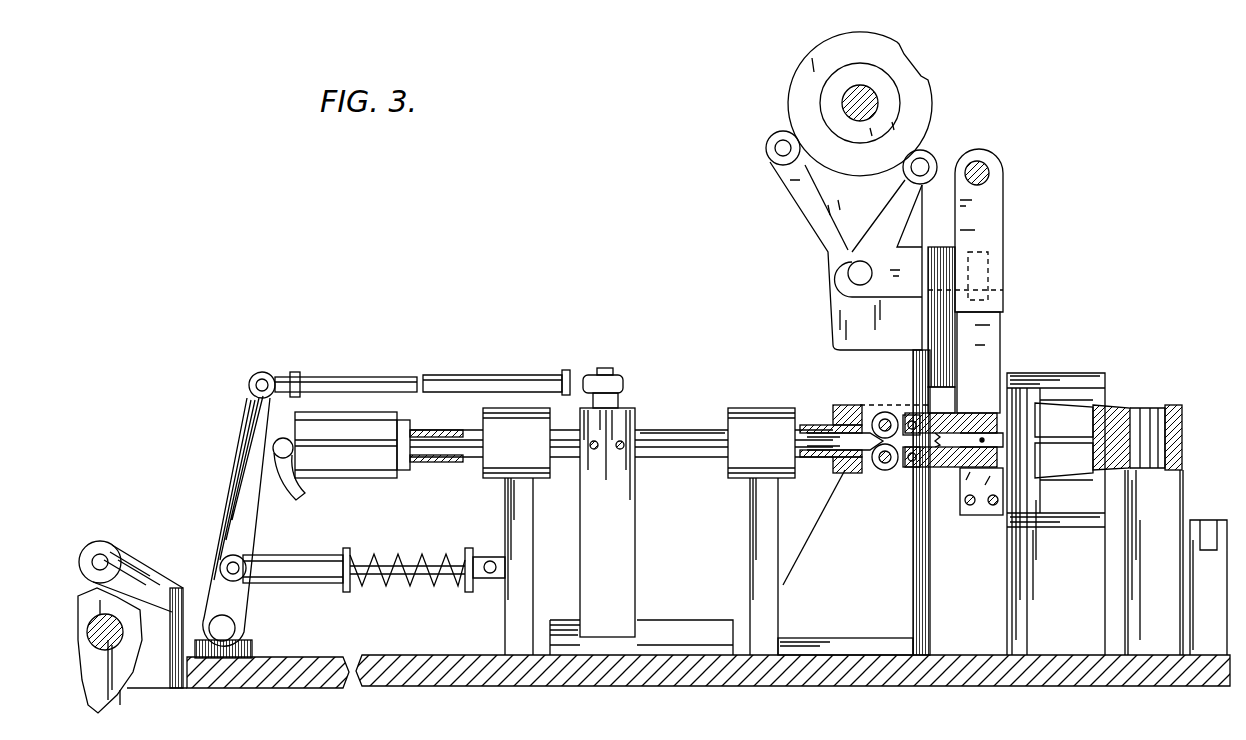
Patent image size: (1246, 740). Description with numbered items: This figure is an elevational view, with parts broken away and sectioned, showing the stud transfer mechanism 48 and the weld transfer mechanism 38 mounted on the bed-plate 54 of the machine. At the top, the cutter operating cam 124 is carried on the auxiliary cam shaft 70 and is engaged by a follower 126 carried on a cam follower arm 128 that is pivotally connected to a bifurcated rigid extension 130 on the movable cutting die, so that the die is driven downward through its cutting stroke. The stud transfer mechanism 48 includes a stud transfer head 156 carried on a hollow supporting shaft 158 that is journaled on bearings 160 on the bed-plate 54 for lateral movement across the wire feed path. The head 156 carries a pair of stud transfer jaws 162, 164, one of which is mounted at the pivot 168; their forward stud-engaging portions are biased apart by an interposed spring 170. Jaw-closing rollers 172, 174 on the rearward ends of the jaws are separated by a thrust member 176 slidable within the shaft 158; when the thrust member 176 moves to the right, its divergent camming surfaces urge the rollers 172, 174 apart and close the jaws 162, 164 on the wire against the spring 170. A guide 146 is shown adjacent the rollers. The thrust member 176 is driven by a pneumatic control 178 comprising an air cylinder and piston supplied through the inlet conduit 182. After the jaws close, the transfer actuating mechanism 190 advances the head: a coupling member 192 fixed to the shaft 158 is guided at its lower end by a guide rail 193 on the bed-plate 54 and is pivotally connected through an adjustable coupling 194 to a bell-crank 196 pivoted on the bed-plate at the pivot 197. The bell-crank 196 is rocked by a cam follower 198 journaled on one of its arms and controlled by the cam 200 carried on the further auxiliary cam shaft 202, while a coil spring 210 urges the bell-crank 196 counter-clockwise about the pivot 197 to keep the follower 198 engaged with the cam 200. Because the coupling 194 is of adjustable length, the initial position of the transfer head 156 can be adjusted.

The weld transfer mechanism 38 is at (1194, 415).
The stud transfer mechanism 48 is at (686, 422).
The bed-plate 54 is at (400, 688).
The auxiliary cam shaft 70 is at (858, 98).
The cutter operating cam 124 is at (816, 66).
The follower 126 is at (935, 155).
The cam follower arm 128 is at (905, 200).
The bifurcated rigid extension 130 is at (1003, 287).
The guide 146 is at (908, 414).
The stud transfer head 156 is at (840, 405).
The hollow supporting shaft 158 is at (700, 457).
The bearings 160 is at (545, 478).
The stud transfer jaw 162 is at (965, 412).
The stud transfer jaw 164 is at (982, 491).
The pivot 168 is at (912, 468).
The spring 170 is at (945, 467).
The jaw-closing roller 172 is at (880, 412).
The jaw-closing roller 174 is at (885, 470).
The thrust member 176 is at (814, 527).
The pneumatic control 178 is at (373, 478).
The inlet conduit 182 is at (285, 500).
The transfer actuating mechanism 190 is at (314, 348).
The coupling member 192 is at (642, 526).
The guide rail 193 is at (686, 620).
The adjustable coupling 194 is at (476, 377).
The bell-crank 196 is at (235, 482).
The pivot 197 is at (238, 630).
The cam follower 198 is at (103, 541).
The cam 200 is at (112, 702).
The auxiliary cam shaft 202 is at (114, 650).
The coil spring 210 is at (408, 554).